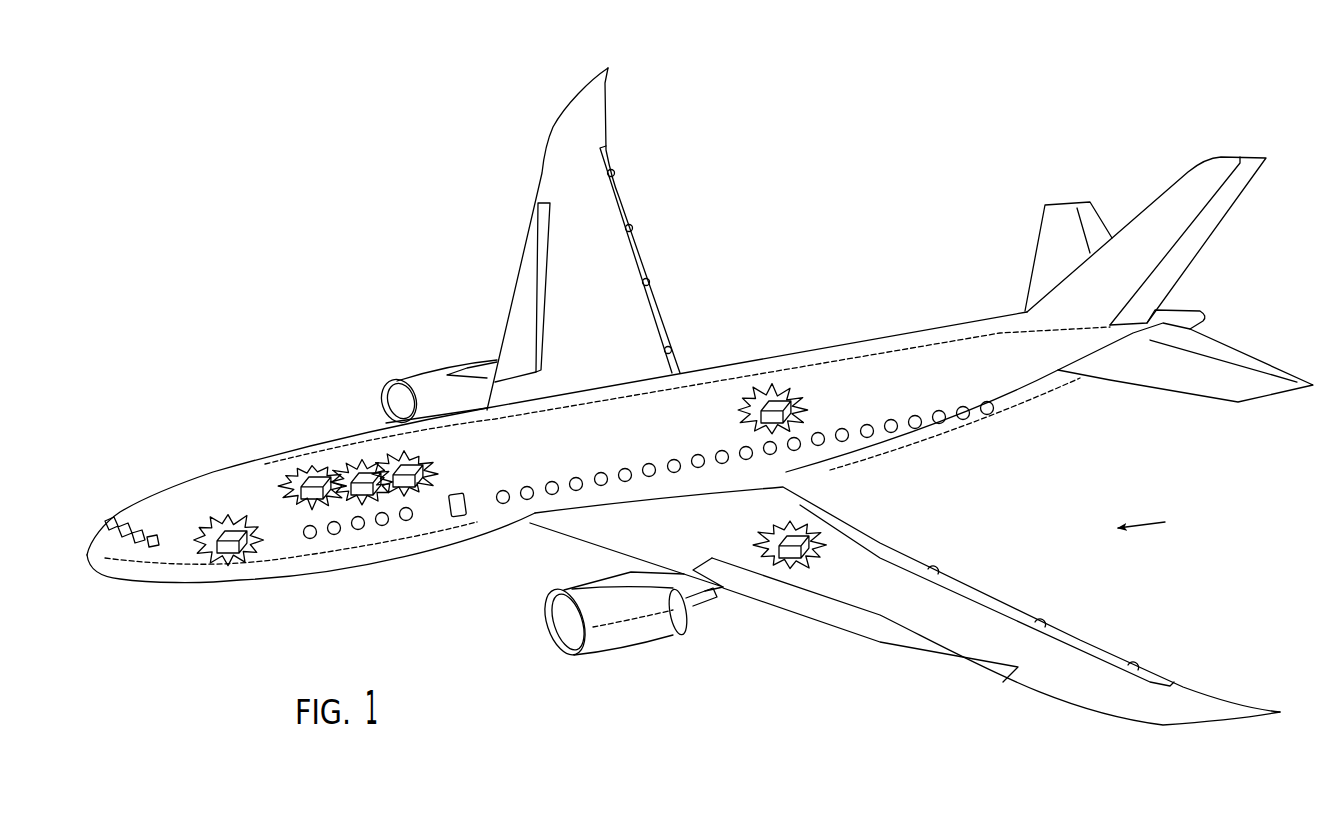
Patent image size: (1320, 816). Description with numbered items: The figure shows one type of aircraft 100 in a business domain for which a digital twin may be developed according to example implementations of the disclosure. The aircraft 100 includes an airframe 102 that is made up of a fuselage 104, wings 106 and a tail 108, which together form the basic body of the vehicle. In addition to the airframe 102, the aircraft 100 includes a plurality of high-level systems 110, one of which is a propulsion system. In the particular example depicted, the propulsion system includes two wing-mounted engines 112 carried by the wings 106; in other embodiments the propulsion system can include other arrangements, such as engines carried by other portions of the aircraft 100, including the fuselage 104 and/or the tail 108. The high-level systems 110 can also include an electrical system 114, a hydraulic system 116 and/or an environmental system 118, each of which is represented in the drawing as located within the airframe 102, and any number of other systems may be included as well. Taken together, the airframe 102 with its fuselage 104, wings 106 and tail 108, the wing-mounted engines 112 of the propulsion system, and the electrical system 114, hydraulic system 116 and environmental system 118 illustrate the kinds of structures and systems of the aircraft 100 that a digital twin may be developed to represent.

The aircraft 100 is at (700, 396).
The airframe 102 is at (598, 453).
The fuselage 104 is at (349, 560).
The wings 106 is at (883, 396).
The tail 108 is at (1002, 229).
The high-level systems 110 is at (1161, 525).
The wing-mounted engines 112 is at (422, 377).
The electrical system 114 is at (227, 530).
The hydraulic system 116 is at (795, 535).
The environmental system 118 is at (771, 404).